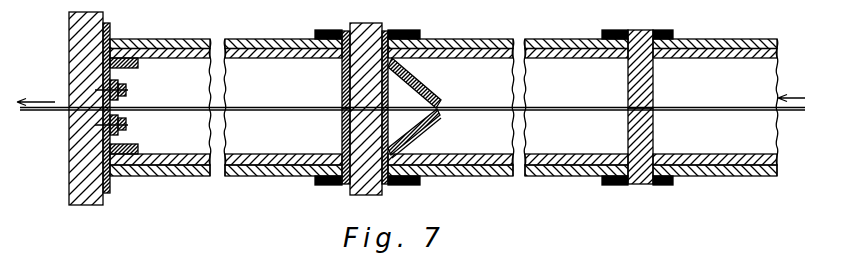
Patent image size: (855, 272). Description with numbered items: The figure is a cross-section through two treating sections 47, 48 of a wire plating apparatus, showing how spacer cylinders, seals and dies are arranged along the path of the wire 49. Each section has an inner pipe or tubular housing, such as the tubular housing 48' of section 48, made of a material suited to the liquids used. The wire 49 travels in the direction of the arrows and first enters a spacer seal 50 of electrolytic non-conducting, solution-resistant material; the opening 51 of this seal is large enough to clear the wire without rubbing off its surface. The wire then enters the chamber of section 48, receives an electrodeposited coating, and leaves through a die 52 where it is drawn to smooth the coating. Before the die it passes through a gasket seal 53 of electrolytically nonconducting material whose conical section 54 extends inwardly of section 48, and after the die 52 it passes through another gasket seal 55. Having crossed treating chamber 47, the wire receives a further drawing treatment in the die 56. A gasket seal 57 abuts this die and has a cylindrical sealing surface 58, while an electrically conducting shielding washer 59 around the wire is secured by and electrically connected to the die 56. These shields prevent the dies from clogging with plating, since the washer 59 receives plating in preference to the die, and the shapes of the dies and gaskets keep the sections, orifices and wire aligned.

The treating section 47 is at (255, 39).
The treating section 48 is at (508, 100).
The inner pipe or tubular housing 48' is at (479, 73).
The wire 49 is at (696, 106).
The spacer seal 50 is at (655, 130).
The opening 51 is at (655, 100).
The die 52 is at (342, 138).
The gasket seal 53 is at (396, 88).
The conical section 54 is at (422, 120).
The gasket seal 55 is at (342, 90).
The die 56 is at (90, 205).
The gasket seal 57 is at (110, 28).
The cylindrical sealing surface 58 is at (138, 69).
The shielding washer 59 is at (128, 124).